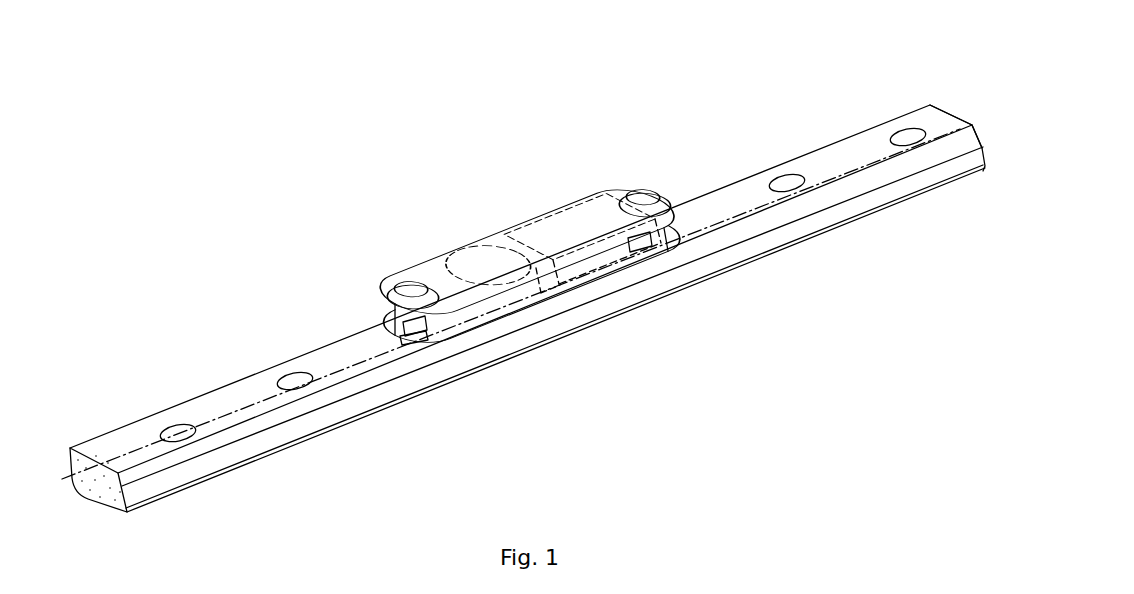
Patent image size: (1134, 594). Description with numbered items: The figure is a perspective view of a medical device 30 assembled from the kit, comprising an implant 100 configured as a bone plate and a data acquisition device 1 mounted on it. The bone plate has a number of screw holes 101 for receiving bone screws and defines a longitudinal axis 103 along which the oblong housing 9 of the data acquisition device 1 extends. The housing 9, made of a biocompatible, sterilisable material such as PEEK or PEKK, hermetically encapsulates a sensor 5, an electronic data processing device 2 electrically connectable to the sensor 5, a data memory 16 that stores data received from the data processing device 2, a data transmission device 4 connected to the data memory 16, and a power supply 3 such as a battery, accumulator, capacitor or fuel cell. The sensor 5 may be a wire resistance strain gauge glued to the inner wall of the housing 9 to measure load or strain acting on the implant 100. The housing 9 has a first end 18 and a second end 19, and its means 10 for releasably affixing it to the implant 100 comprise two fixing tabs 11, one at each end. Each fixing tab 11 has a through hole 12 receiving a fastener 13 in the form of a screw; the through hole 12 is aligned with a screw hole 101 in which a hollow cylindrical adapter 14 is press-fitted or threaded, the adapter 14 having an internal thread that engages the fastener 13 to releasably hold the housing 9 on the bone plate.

The data acquisition device 1 is at (492, 199).
The electronic data processing device 2 is at (577, 225).
The power supply 3 is at (478, 262).
The data transmission device 4 is at (570, 270).
The sensor 5 is at (540, 285).
The housing 9 is at (437, 263).
The means for releasably affixing 10 is at (663, 181).
The fixing tab 11 is at (455, 327).
The through hole 12 is at (425, 287).
The fastener 13 is at (413, 300).
The adapter 14 is at (405, 332).
The data memory 16 is at (637, 248).
The first end 18 is at (387, 317).
The second end 19 is at (693, 207).
The medical device 30 is at (521, 78).
The implant 100 is at (848, 210).
The screw hole 101 is at (908, 140).
The longitudinal axis 103 is at (978, 122).